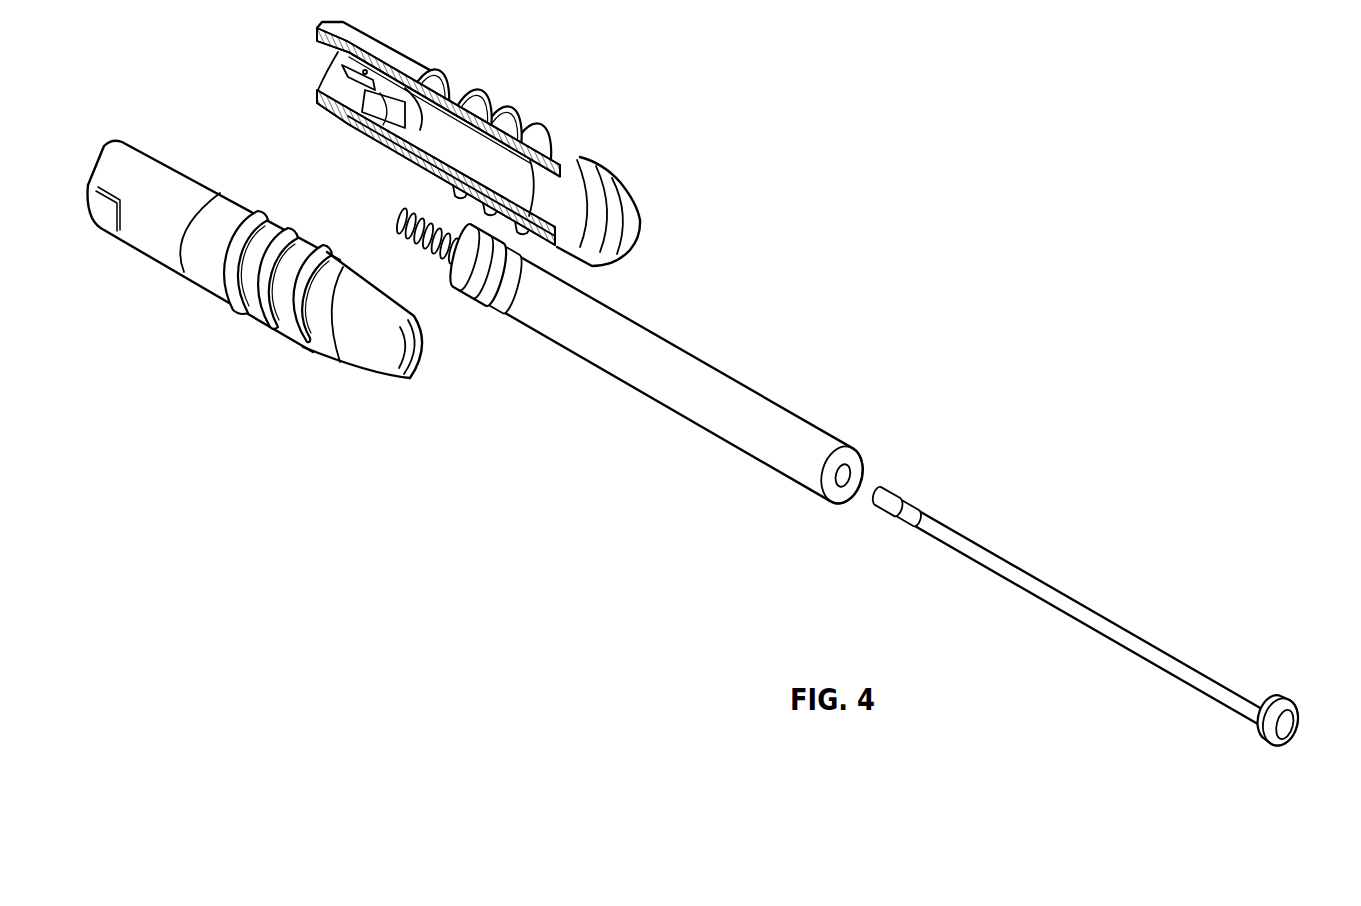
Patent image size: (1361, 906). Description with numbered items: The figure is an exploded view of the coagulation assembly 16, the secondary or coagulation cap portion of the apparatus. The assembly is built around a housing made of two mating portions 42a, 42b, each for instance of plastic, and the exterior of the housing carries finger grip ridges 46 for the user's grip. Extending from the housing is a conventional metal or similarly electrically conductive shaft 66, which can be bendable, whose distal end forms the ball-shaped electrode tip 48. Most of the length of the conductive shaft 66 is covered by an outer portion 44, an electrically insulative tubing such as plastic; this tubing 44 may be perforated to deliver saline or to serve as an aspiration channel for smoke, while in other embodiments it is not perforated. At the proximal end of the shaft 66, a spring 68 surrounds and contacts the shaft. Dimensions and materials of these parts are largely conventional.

The coagulation assembly 16 is at (886, 278).
The mating portion of housing 42a is at (443, 144).
The mating portion of housing 42b is at (148, 165).
The insulated shaft (outer portion / tubing) 44 is at (660, 353).
The exterior finger grip ridges 46 is at (508, 110).
The electrode tip (ball tip) 48 is at (1287, 730).
The shaft 66 is at (1195, 688).
The spring 68 is at (398, 226).